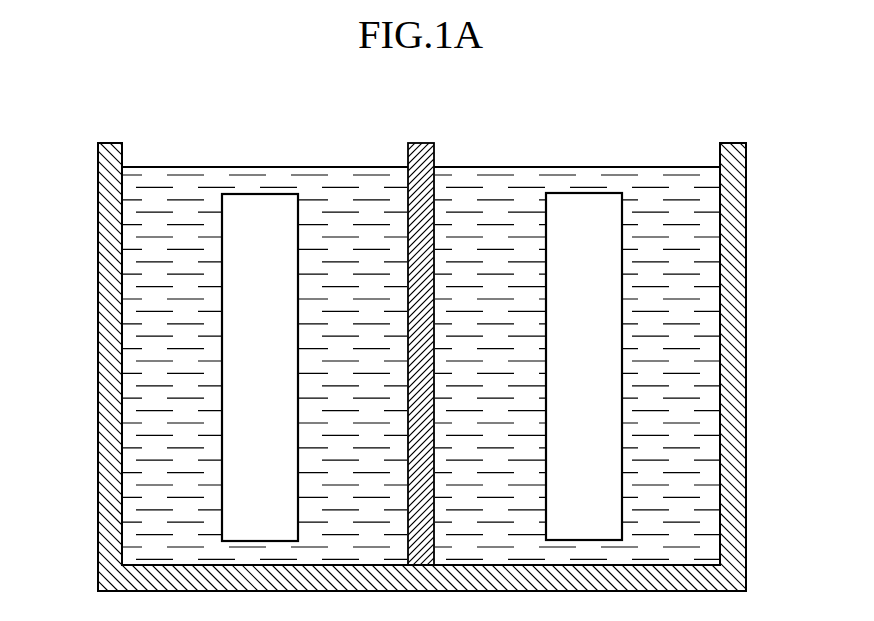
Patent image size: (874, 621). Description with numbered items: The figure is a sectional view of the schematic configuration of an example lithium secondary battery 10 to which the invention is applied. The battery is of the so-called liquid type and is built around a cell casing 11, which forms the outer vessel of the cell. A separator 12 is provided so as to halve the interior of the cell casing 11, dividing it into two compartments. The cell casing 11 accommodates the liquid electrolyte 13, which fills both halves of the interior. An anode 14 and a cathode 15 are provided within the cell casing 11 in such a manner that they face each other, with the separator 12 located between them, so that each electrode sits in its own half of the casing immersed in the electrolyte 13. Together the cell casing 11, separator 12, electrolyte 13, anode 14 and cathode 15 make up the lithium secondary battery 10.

The lithium secondary battery 10 is at (764, 117).
The cell casing 11 is at (740, 243).
The separator 12 is at (420, 152).
The electrolyte 13 is at (672, 178).
The anode 14 is at (260, 203).
The cathode 15 is at (584, 201).